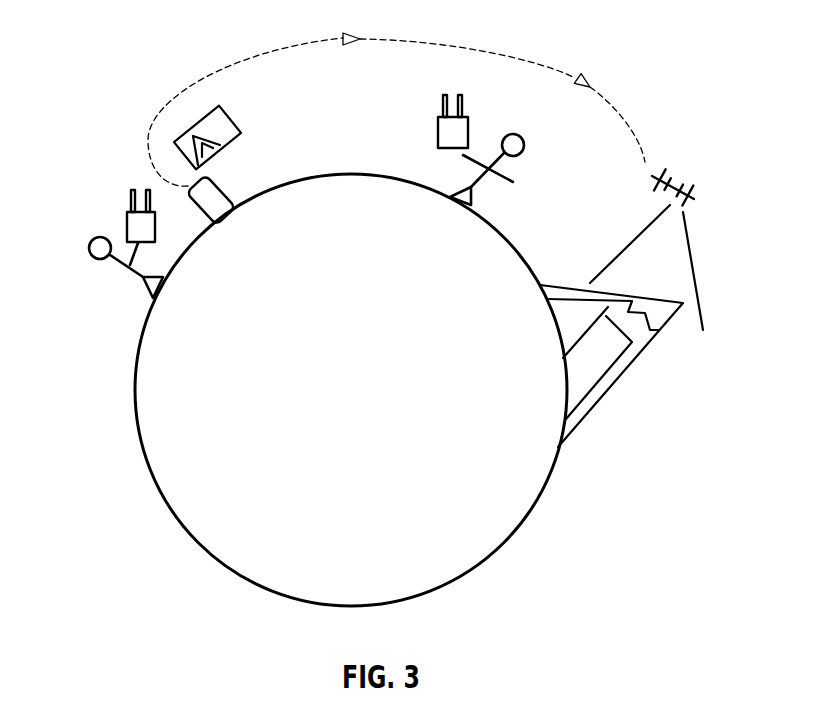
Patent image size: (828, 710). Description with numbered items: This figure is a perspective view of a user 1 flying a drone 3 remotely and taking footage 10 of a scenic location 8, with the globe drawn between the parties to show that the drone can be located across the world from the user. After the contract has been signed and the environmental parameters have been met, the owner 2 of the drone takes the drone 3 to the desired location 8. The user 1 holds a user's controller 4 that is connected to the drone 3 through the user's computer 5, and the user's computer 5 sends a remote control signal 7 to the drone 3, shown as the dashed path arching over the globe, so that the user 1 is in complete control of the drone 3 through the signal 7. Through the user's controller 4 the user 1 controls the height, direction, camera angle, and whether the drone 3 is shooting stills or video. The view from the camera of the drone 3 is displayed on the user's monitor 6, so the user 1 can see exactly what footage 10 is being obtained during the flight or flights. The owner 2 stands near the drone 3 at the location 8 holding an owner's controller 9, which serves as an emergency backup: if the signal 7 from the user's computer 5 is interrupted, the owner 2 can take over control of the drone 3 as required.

The user 1 is at (87, 250).
The owner of the drone 2 is at (518, 132).
The drone 3 is at (658, 168).
The user's controller 4 is at (127, 217).
The user's computer 5 is at (217, 203).
The user's monitor 6 is at (233, 140).
The control signal 7 is at (293, 45).
The scenic location 8 is at (627, 372).
The owner's controller 9 is at (438, 135).
The drone footage 10 is at (630, 243).